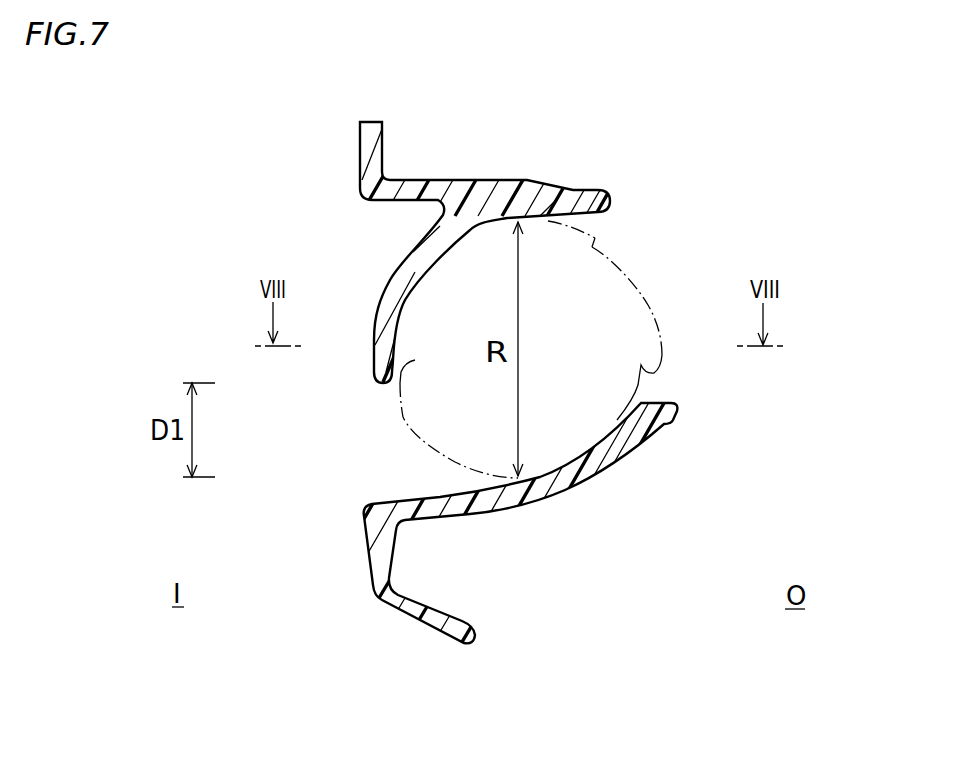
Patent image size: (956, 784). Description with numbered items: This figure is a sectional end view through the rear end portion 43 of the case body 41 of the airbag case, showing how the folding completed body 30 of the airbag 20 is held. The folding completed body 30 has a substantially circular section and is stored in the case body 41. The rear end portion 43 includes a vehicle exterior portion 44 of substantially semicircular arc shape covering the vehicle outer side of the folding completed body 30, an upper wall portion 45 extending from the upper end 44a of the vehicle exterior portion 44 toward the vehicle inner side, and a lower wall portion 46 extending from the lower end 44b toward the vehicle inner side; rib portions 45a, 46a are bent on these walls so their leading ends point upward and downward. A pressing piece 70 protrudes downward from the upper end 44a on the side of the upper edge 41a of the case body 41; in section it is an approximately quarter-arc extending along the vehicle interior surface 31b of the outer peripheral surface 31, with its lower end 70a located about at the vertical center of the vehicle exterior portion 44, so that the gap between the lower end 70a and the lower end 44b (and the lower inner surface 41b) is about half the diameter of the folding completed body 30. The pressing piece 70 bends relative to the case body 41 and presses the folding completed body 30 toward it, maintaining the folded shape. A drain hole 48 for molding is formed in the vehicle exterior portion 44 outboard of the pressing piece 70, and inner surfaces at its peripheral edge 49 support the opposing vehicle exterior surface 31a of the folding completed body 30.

The airbag 20 is at (552, 331).
The folding completed body 30 is at (552, 331).
The outer peripheral surface 31 is at (552, 413).
The vehicle exterior surface 31a is at (665, 348).
The vehicle interior surface 31b is at (403, 417).
The case body 41 is at (501, 386).
The upper edge 41a is at (543, 190).
The lower inner surface 41b is at (532, 500).
The rear end portion 43 is at (538, 532).
The vehicle exterior portion 44 is at (638, 447).
The upper end 44a is at (562, 144).
The lower end 44b is at (554, 537).
The upper wall portion 45 is at (413, 180).
The rib portion 45a is at (338, 151).
The lower wall portion 46 is at (440, 508).
The rib portion 46a is at (373, 580).
The drain hole 48 is at (635, 238).
The peripheral edge 49 is at (613, 200).
The pressing piece 70 is at (385, 268).
The lower end 70a is at (383, 373).